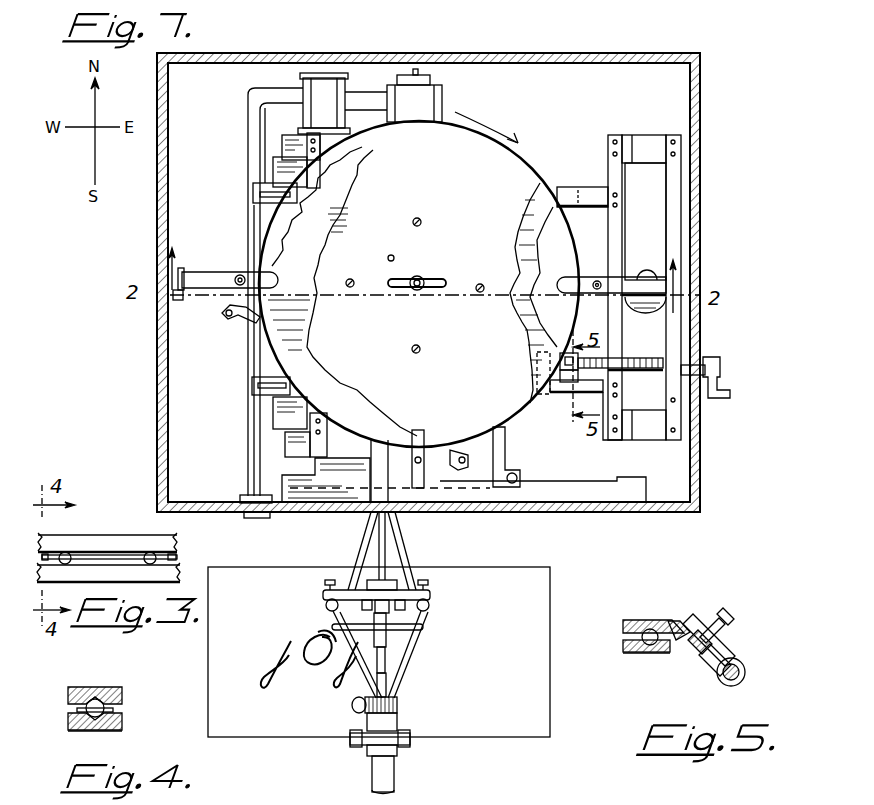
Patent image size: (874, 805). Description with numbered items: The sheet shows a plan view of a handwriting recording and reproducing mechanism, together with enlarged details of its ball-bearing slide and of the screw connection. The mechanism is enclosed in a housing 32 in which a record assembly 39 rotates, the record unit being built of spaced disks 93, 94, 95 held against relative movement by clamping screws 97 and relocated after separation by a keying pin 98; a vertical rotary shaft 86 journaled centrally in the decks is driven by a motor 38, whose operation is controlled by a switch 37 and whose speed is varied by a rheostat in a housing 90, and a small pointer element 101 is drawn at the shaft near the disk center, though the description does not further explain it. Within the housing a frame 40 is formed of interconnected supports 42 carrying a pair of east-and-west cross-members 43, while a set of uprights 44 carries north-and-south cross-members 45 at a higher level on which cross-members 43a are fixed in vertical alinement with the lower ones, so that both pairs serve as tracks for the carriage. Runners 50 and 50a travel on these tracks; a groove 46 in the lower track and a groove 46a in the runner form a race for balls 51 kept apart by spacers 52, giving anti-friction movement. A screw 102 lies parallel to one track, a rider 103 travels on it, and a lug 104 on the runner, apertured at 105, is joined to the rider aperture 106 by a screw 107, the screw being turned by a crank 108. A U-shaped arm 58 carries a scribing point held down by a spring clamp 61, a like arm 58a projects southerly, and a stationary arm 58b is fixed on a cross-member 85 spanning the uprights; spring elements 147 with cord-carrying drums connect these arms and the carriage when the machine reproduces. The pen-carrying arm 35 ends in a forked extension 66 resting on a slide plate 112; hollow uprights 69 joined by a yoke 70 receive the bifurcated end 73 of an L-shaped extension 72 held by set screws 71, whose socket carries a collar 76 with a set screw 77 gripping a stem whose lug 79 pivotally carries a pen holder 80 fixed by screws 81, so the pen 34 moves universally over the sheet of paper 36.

In FIG. 1, the housing 32 is at (704, 100).
In FIG. 1, the pen 34 is at (372, 770).
In FIG. 1, the arm 35 is at (376, 492).
In FIG. 1, the sheet of paper 36 is at (379, 652).
In FIG. 1, the switch 37 is at (246, 512).
In FIG. 1, the motor 38 is at (443, 97).
In FIG. 1, the record assembly 39 is at (527, 165).
In FIG. 1, the frame 40 is at (605, 440).
In FIG. 1, the supports 42 is at (283, 172).
In FIG. 3, the cross-members 43 is at (108, 574).
In FIG. 4, the cross-members 43 is at (68, 720).
In FIG. 5, the cross-members 43 is at (625, 648).
In FIG. 1, the cross-members 43a is at (590, 197).
In FIG. 1, the uprights 44 is at (300, 147).
In FIG. 1, the cross-members 45 is at (327, 440).
In FIG. 1, the groove 46 is at (262, 203).
In FIG. 4, the groove 46 is at (80, 732).
In FIG. 5, the groove 46 is at (643, 652).
In FIG. 4, the groove 46a is at (92, 692).
In FIG. 5, the groove 46a is at (672, 620).
In FIG. 3, the runners 50 is at (107, 542).
In FIG. 4, the runners 50 is at (68, 690).
In FIG. 5, the runners 50 is at (634, 620).
In FIG. 1, the runners 50a is at (253, 190).
In FIG. 3, the balls 51 is at (70, 550).
In FIG. 4, the balls 51 is at (105, 697).
In FIG. 5, the balls 51 is at (645, 636).
In FIG. 3, the spacers 52 is at (179, 558).
In FIG. 4, the spacers 52 is at (122, 709).
In FIG. 1, the U-shaped arm 58 is at (212, 276).
In FIG. 1, the arm 58a is at (420, 480).
In FIG. 1, the arm 58b is at (609, 287).
In FIG. 1, the spring clamp 61 is at (255, 278).
In FIG. 1, the forked extension 66 is at (395, 553).
In FIG. 1, the hollow uprights 69 is at (326, 605).
In FIG. 1, the yoke 70 is at (431, 596).
In FIG. 1, the set screws 71 is at (323, 582).
In FIG. 1, the L-shaped extension 72 is at (401, 658).
In FIG. 1, the bifurcated end 73 is at (430, 610).
In FIG. 1, the collar 76 is at (398, 706).
In FIG. 1, the set screw 77 is at (352, 706).
In FIG. 1, the lug 79 is at (400, 749).
In FIG. 1, the pen holder 80 is at (400, 725).
In FIG. 1, the screws 81 is at (412, 737).
In FIG. 1, the cross-member 85 is at (673, 193).
In FIG. 1, the vertical rotary shaft 86 is at (424, 278).
In FIG. 1, the rheostat housing 90 is at (342, 103).
In FIG. 1, the disk 93 is at (496, 324).
In FIG. 1, the disk 94 is at (545, 336).
In FIG. 1, the disk 95 is at (545, 335).
In FIG. 1, the clamping screws 97 is at (421, 219).
In FIG. 1, the keying pin 98 is at (395, 256).
In FIG. 1, the pointer arm 101 is at (428, 288).
In FIG. 1, the screw 102 is at (645, 358).
In FIG. 5, the screw 102 is at (745, 672).
In FIG. 1, the rider 103 is at (578, 367).
In FIG. 5, the rider 103 is at (717, 665).
In FIG. 1, the lug 104 is at (578, 382).
In FIG. 5, the lug 104 is at (680, 620).
In FIG. 5, the aperture 105 is at (690, 660).
In FIG. 5, the aperture 106 is at (706, 628).
In FIG. 1, the screw 107 is at (528, 392).
In FIG. 5, the screw 107 is at (722, 634).
In FIG. 1, the crank 108 is at (718, 364).
In FIG. 1, the plate 112 is at (543, 489).
In FIG. 1, the spring elements 147 is at (258, 333).